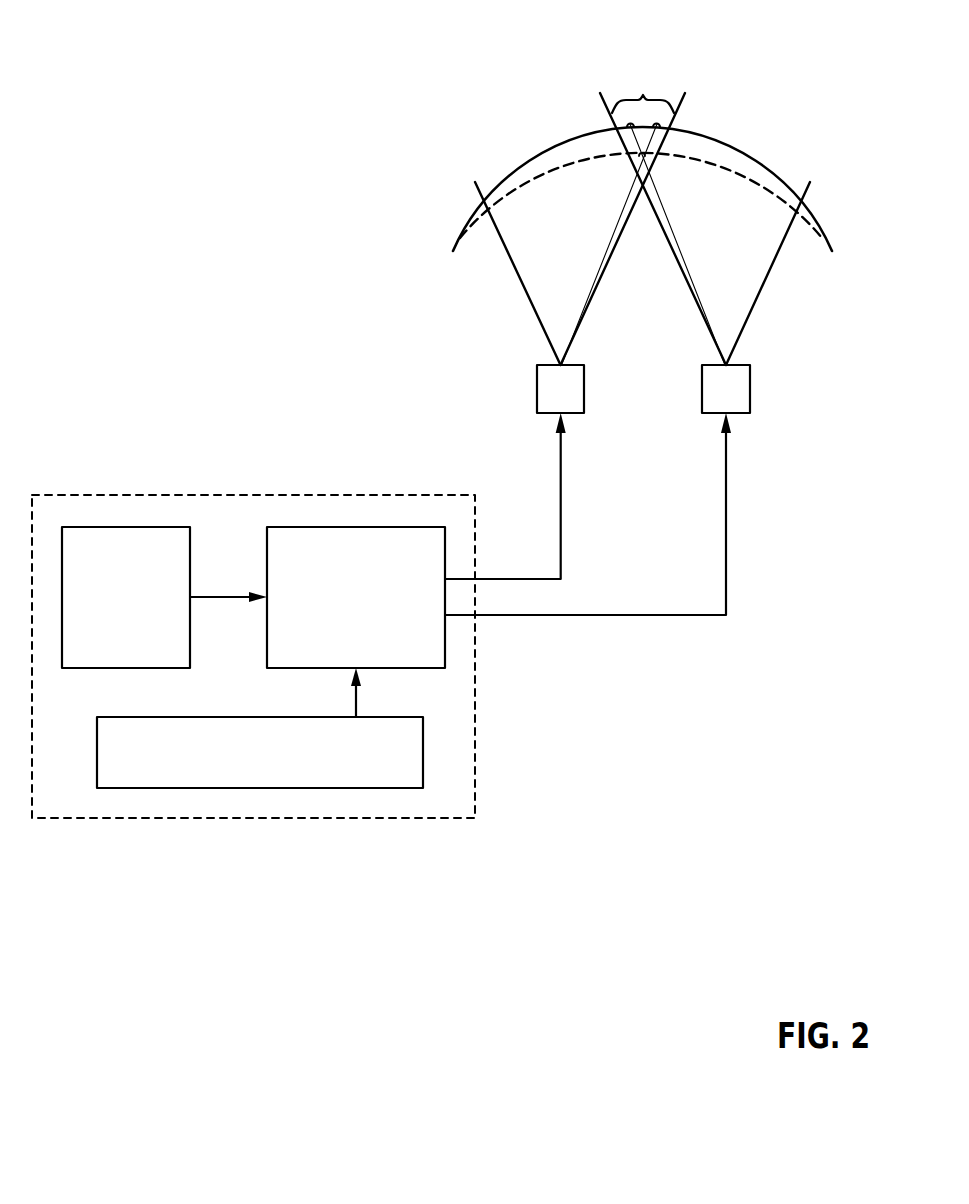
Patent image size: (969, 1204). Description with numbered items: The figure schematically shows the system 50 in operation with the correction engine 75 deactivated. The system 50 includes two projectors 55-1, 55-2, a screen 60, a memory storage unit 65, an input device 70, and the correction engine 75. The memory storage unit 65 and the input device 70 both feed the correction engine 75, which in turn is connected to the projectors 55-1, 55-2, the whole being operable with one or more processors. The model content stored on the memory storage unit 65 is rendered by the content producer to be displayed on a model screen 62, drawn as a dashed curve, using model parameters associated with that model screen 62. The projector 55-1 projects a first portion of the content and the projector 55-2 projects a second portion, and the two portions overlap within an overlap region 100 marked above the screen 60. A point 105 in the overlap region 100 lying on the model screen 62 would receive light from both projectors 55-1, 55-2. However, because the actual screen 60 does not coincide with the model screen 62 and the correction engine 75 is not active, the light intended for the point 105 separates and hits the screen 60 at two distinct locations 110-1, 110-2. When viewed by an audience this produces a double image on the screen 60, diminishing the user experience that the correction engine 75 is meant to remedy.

The system 50 is at (218, 93).
The projector 55-1 is at (560, 390).
The projector 55-2 is at (727, 388).
The screen 60 is at (743, 152).
The model screen 62 is at (758, 188).
The memory storage unit 65 is at (142, 612).
The input device 70 is at (276, 769).
The correction engine 75 is at (373, 612).
The overlap region 100 is at (643, 95).
The point 105 is at (639, 156).
The location 110-1 is at (660, 127).
The location 110-2 is at (627, 127).